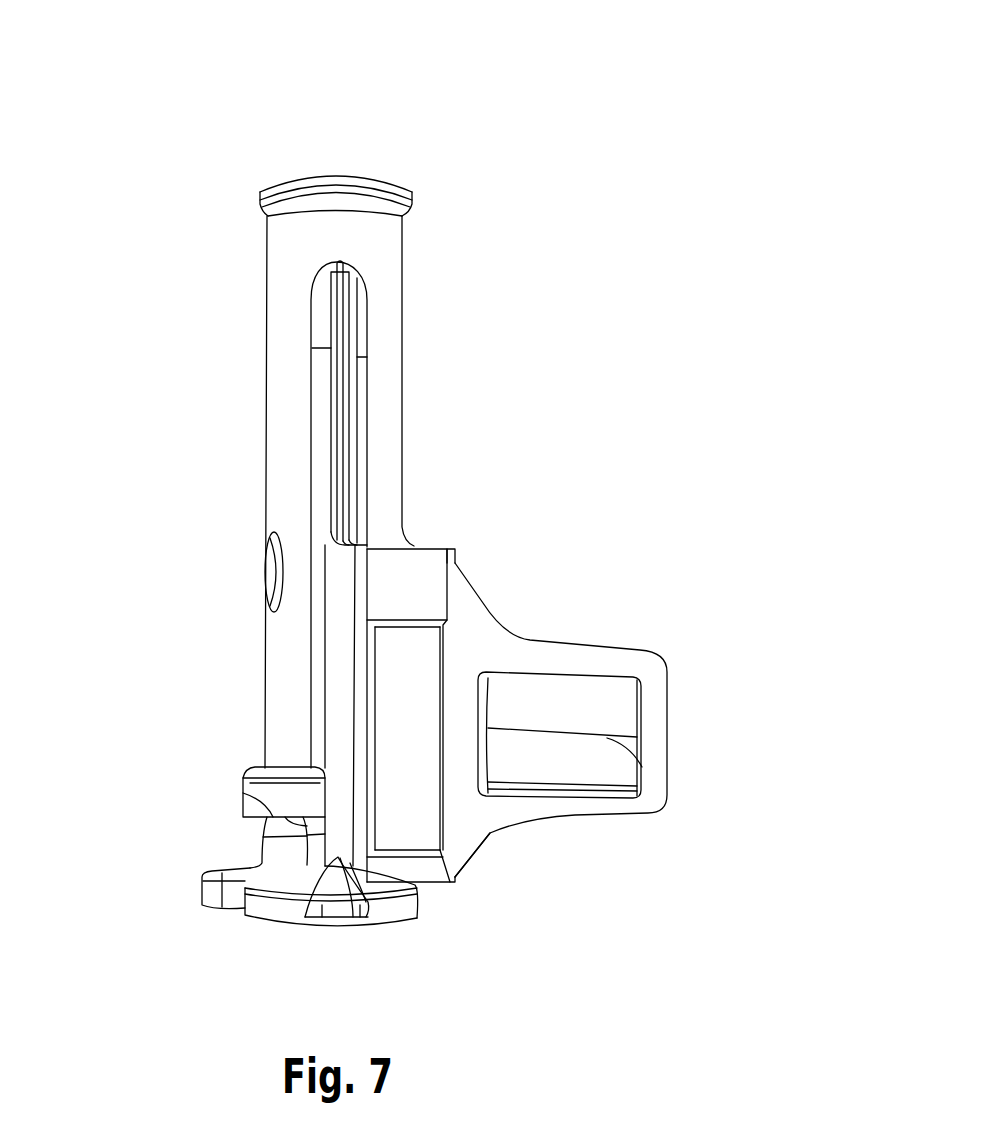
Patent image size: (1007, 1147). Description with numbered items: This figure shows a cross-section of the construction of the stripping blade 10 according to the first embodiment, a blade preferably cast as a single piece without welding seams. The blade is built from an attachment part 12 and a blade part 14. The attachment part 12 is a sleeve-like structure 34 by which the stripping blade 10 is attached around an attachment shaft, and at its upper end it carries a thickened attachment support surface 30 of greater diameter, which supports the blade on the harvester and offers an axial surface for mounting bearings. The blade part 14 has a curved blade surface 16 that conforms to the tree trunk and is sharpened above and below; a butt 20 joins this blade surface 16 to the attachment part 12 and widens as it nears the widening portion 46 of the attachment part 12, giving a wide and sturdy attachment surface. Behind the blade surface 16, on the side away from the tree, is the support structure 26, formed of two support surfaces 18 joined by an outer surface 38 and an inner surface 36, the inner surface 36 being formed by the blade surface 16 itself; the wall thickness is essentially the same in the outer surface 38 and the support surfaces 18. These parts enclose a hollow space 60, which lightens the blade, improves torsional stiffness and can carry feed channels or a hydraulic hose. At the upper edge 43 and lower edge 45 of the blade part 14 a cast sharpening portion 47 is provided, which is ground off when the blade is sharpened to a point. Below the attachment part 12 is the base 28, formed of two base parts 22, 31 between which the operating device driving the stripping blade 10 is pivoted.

The stripping blade 10 is at (678, 243).
The attachment part 12 is at (433, 315).
The blade part 14 is at (547, 612).
The blade surface 16 is at (424, 717).
The support surfaces 18 is at (573, 662).
The butt 20 is at (343, 678).
The base part 22 is at (267, 908).
The support structure 26 is at (585, 725).
The base 28 is at (213, 860).
The attachment support surface 30 is at (359, 167).
The base part 31 is at (243, 792).
The sleeve-like structure 34 is at (277, 443).
The inner surface 36 is at (458, 763).
The outer surface 38 is at (642, 767).
The upper edge 43 is at (470, 557).
The lower edge 45 is at (465, 880).
The widening portion 46 is at (340, 422).
The sharpening portion 47 is at (449, 547).
The hollow space 60 is at (513, 740).